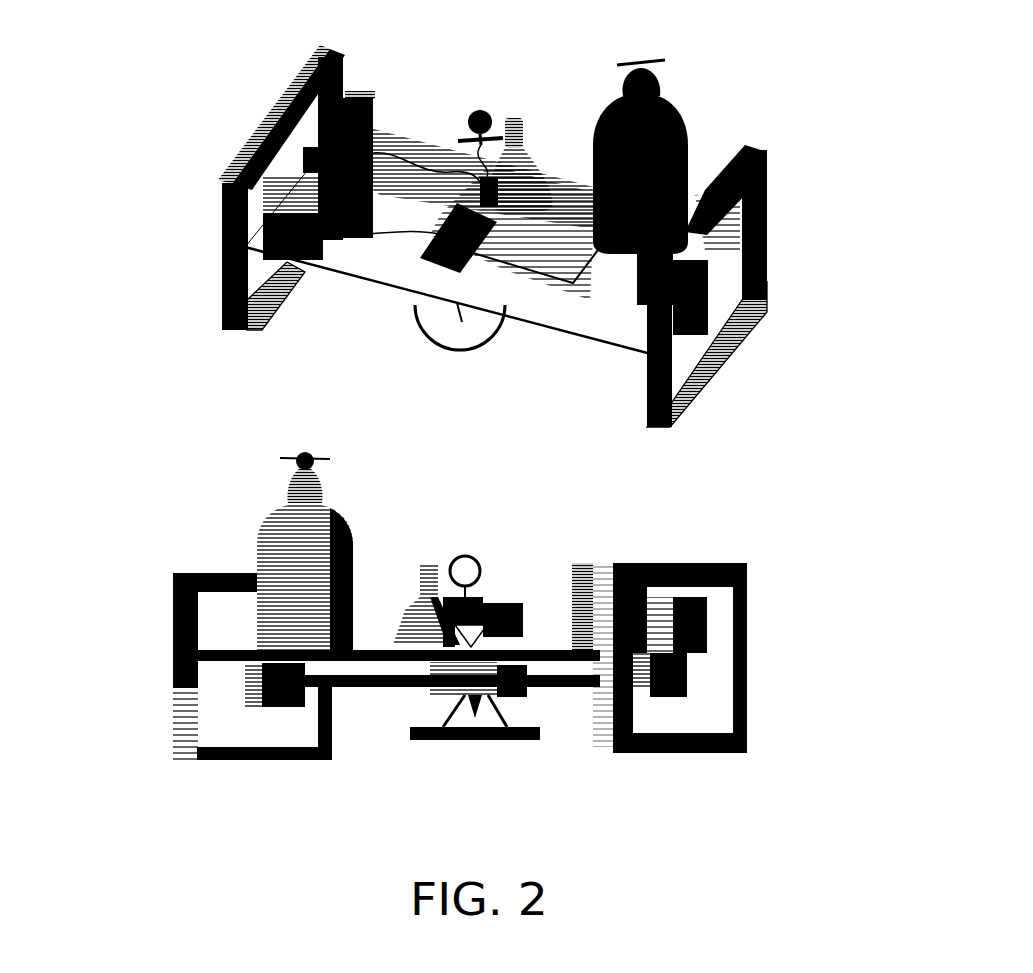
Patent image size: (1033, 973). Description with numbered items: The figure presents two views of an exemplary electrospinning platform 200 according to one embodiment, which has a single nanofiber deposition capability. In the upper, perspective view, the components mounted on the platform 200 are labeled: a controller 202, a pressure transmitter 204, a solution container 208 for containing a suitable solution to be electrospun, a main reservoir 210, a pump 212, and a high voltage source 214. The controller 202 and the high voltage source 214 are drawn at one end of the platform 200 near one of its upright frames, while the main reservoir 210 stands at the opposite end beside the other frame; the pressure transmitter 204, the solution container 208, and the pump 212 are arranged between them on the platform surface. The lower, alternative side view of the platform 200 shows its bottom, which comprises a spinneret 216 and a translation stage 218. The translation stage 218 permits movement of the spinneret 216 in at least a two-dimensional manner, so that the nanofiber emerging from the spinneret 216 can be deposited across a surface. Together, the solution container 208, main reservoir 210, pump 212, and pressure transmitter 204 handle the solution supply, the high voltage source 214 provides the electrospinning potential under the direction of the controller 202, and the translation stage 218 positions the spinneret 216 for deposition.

The electrospinning platform 200 is at (214, 168).
The controller 202 is at (372, 88).
The pressure transmitter 204 is at (459, 103).
The solution container 208 is at (540, 118).
The main reservoir 210 is at (750, 112).
The pump 212 is at (495, 280).
The high voltage source 214 is at (303, 265).
The spinneret 216 is at (458, 717).
The translation stage 218 is at (561, 688).